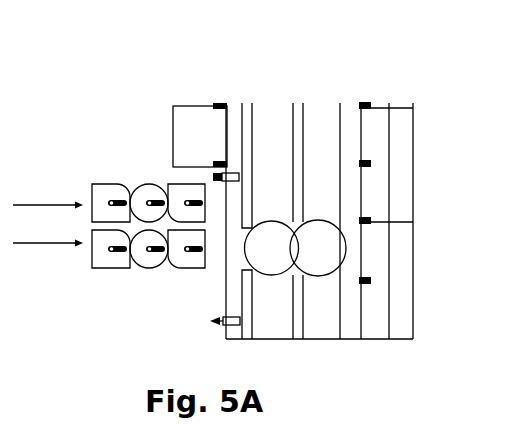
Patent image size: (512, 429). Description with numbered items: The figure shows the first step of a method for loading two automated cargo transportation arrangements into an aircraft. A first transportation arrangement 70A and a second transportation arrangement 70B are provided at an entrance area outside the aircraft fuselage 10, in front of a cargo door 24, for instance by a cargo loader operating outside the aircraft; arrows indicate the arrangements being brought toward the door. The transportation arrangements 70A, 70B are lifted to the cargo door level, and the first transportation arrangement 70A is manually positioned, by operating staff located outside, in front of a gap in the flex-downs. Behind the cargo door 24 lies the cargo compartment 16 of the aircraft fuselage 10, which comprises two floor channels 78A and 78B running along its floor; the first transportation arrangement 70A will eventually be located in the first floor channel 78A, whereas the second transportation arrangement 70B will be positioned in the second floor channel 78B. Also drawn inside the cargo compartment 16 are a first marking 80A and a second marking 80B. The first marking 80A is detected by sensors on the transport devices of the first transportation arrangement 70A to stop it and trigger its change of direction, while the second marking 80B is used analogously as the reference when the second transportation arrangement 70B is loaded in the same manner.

The aircraft fuselage 10 is at (432, 90).
The cargo compartment 16 is at (225, 91).
The cargo door 24 is at (212, 275).
The first transportation arrangement 70A is at (100, 268).
The second transportation arrangement 70B is at (100, 184).
The first floor channel 78A is at (324, 108).
The second floor channel 78B is at (271, 107).
The first marking 80A is at (316, 276).
The second marking 80B is at (266, 277).